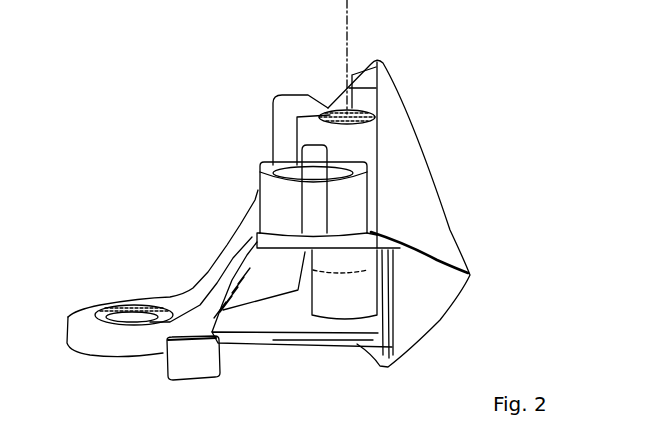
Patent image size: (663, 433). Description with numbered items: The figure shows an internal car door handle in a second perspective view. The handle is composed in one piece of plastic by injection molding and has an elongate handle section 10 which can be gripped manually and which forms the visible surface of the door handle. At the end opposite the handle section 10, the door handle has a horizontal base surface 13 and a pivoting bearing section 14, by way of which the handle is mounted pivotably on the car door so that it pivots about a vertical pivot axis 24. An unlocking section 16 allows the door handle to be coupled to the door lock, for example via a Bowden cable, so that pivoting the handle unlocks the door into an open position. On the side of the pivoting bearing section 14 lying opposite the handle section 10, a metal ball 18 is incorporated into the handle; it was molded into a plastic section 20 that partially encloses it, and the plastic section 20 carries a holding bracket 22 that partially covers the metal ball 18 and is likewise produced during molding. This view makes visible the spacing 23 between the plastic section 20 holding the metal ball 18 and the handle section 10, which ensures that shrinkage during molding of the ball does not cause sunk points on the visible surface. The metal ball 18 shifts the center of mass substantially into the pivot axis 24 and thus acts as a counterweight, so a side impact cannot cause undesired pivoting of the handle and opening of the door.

The handle section 10 is at (420, 158).
The horizontal base surface 13 is at (468, 273).
The pivoting bearing section 14 is at (328, 108).
The unlocking section 16 is at (82, 315).
The metal ball 18 is at (297, 162).
The plastic section 20 is at (280, 197).
The holding bracket 22 is at (330, 162).
The spacing 23 is at (400, 225).
The pivot axis 24 is at (348, 27).